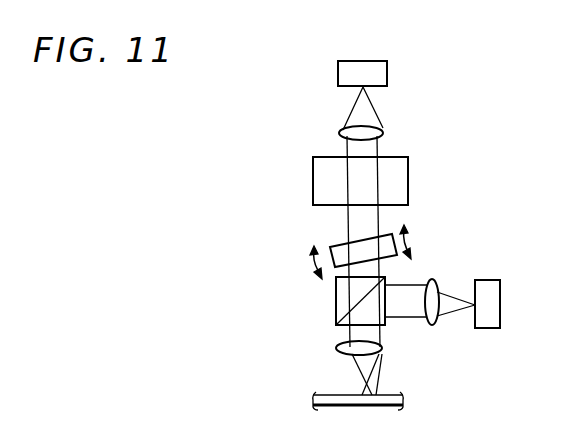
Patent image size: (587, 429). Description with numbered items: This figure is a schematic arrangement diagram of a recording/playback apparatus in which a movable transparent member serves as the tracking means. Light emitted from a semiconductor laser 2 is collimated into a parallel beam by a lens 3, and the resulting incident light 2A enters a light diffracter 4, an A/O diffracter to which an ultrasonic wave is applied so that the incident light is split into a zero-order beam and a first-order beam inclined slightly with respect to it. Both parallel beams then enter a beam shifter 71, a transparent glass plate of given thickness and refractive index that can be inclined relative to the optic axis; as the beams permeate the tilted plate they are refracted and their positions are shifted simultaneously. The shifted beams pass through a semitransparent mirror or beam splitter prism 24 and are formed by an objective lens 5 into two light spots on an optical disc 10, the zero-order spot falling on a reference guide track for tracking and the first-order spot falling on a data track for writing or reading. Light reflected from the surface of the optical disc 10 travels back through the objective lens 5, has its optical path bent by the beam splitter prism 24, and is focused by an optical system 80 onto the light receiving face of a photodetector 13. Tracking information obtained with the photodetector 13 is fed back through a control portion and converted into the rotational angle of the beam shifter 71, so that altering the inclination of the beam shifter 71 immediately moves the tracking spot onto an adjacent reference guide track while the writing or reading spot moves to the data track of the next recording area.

The semiconductor laser 2 is at (338, 70).
The incident light 2A is at (374, 108).
The lens 3 is at (341, 130).
The light diffracter 4 is at (313, 180).
The beam shifter 71 is at (327, 250).
The beam splitter prism 24 is at (336, 305).
The optical system 80 is at (434, 279).
The photodetector 13 is at (483, 329).
The objective lens 5 is at (337, 350).
The optical disc 10 is at (325, 404).